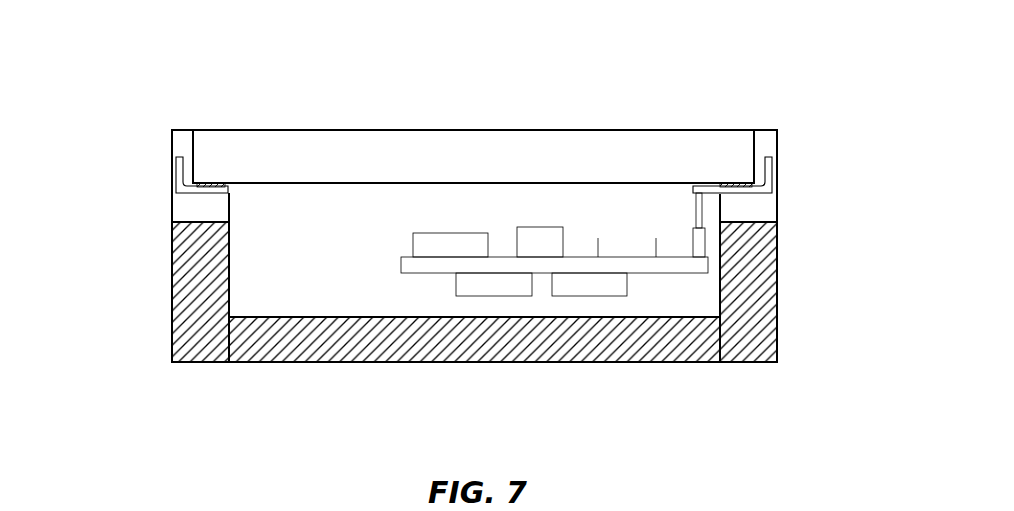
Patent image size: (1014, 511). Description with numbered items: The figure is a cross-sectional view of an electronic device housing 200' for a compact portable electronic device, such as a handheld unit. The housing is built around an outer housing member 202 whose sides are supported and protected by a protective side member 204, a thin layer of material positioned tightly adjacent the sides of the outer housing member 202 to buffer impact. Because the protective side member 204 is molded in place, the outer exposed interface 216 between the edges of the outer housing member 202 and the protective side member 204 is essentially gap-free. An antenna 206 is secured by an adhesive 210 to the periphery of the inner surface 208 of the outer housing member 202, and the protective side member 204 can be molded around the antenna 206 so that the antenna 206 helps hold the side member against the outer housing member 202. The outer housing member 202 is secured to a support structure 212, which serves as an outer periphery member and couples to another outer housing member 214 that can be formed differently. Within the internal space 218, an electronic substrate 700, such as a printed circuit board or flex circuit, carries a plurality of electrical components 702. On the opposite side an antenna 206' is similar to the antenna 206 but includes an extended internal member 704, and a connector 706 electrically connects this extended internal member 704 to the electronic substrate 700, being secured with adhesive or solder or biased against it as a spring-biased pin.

The electronic device housing 200' is at (402, 190).
The outer housing member 202 is at (493, 168).
The protective side member 204 is at (170, 203).
The antenna 206 is at (156, 163).
The antenna 206' is at (782, 163).
The inner surface 208 is at (332, 196).
The adhesive 210 is at (232, 187).
The support structure 212 is at (170, 284).
The outer housing member 214 is at (364, 342).
The outer exposed interface 216 is at (193, 116).
The internal space 218 is at (313, 303).
The electronic substrate 700 is at (400, 265).
The electrical components 702 is at (466, 256).
The support post 704 is at (702, 186).
The connector 706 is at (679, 211).